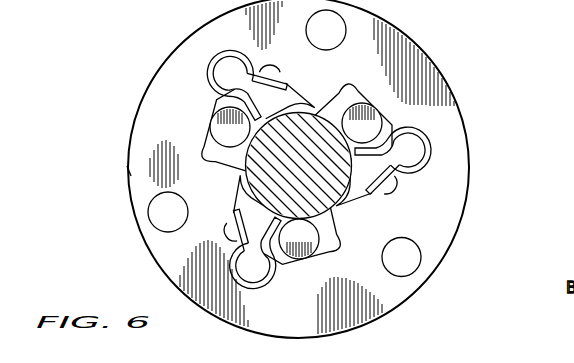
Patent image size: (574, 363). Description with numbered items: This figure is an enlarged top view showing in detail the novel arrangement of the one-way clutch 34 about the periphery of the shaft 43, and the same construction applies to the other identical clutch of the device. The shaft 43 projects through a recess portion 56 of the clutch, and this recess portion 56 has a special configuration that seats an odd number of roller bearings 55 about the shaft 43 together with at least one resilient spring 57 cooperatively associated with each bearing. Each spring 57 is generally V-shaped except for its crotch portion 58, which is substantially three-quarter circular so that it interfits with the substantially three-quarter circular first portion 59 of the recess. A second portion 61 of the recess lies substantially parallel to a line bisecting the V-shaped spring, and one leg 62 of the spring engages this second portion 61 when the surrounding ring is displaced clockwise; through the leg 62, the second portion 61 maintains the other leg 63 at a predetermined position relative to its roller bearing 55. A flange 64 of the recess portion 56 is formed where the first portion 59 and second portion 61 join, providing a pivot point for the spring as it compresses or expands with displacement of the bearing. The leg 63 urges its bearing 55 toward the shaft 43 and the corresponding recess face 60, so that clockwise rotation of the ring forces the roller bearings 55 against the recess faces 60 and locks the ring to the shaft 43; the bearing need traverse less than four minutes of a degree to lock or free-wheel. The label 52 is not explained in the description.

The one-way clutch 34 is at (477, 172).
The shaft 43 is at (284, 164).
The roller bearings 55 is at (237, 131).
The recess portion 56 is at (330, 221).
The resilient spring 57 is at (208, 70).
The crotch portion 58 is at (217, 88).
The first portion 59 is at (270, 283).
The recess face 60 is at (207, 123).
The second portion 61 is at (300, 98).
The leg 62 is at (246, 237).
The leg 63 is at (377, 152).
The flange 64 is at (389, 176).
The disc rim 52 is at (134, 171).